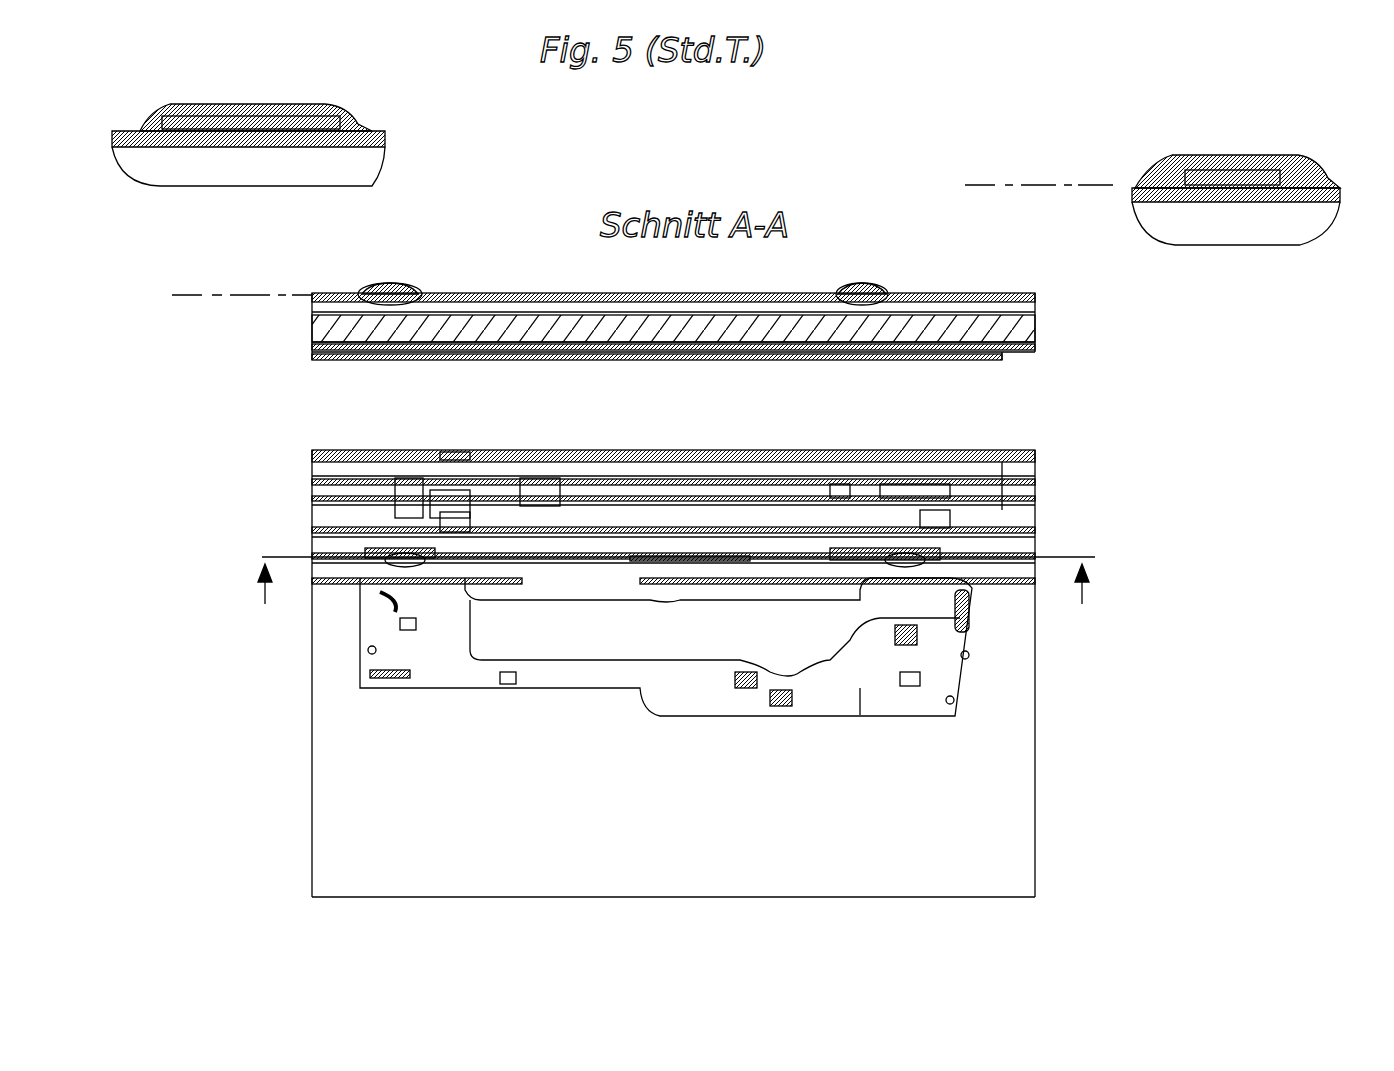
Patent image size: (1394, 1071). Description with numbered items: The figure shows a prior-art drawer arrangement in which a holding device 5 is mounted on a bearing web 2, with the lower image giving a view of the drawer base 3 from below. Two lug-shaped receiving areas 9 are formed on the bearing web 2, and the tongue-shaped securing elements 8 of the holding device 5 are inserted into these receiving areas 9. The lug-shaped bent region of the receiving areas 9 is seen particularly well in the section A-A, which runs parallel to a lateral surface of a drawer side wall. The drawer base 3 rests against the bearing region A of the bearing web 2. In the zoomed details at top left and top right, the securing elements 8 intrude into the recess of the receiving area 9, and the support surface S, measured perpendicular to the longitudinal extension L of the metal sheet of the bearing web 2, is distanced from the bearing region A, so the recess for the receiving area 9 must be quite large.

The bearing web 2 is at (1005, 535).
The drawer base 3 is at (1030, 325).
The holding device 5 is at (410, 690).
The securing elements 8 is at (208, 150).
The receiving areas 9 is at (1132, 212).
The support surface S is at (288, 150).
The bearing region A is at (623, 300).
The longitudinal extension L is at (250, 298).